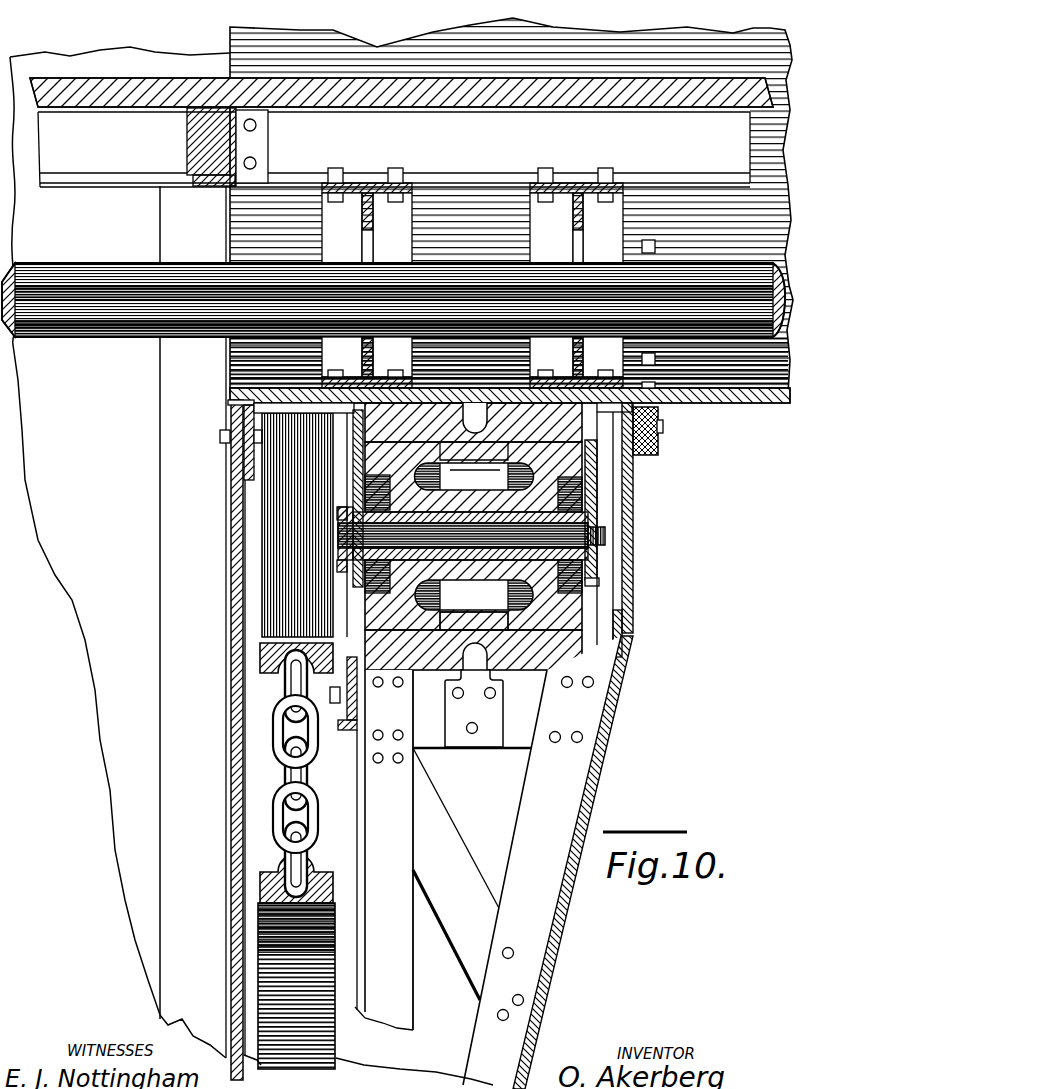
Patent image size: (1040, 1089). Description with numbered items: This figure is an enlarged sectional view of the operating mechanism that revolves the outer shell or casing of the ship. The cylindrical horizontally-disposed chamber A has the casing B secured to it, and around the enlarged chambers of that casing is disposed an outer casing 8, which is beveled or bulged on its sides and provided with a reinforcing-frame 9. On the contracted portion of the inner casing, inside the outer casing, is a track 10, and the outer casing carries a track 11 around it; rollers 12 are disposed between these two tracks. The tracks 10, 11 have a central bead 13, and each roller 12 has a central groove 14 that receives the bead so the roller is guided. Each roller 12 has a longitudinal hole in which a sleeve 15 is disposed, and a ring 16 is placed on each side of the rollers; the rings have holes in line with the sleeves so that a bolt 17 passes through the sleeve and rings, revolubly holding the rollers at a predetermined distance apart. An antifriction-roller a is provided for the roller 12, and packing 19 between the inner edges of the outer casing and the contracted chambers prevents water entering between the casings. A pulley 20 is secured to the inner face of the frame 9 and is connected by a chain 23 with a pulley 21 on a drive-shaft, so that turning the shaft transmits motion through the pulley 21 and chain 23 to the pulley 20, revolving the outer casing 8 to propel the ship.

The outer casing 8 is at (561, 930).
The reinforcing-frame 9 is at (447, 850).
The track 10 is at (473, 422).
The track 11 is at (513, 653).
The roller 12 is at (600, 608).
The central bead 13 is at (473, 535).
The central groove 14 is at (473, 594).
The sleeve 15 is at (632, 510).
The ring 16 is at (509, 532).
The bolt 17 is at (606, 540).
The packing 19 is at (660, 450).
The ring or pulley 20 is at (262, 657).
The pulley 21 is at (262, 937).
The chain 23 is at (306, 790).
The antifriction-roller a is at (599, 581).
The cylindrical chamber A is at (753, 403).
The casing B is at (229, 815).